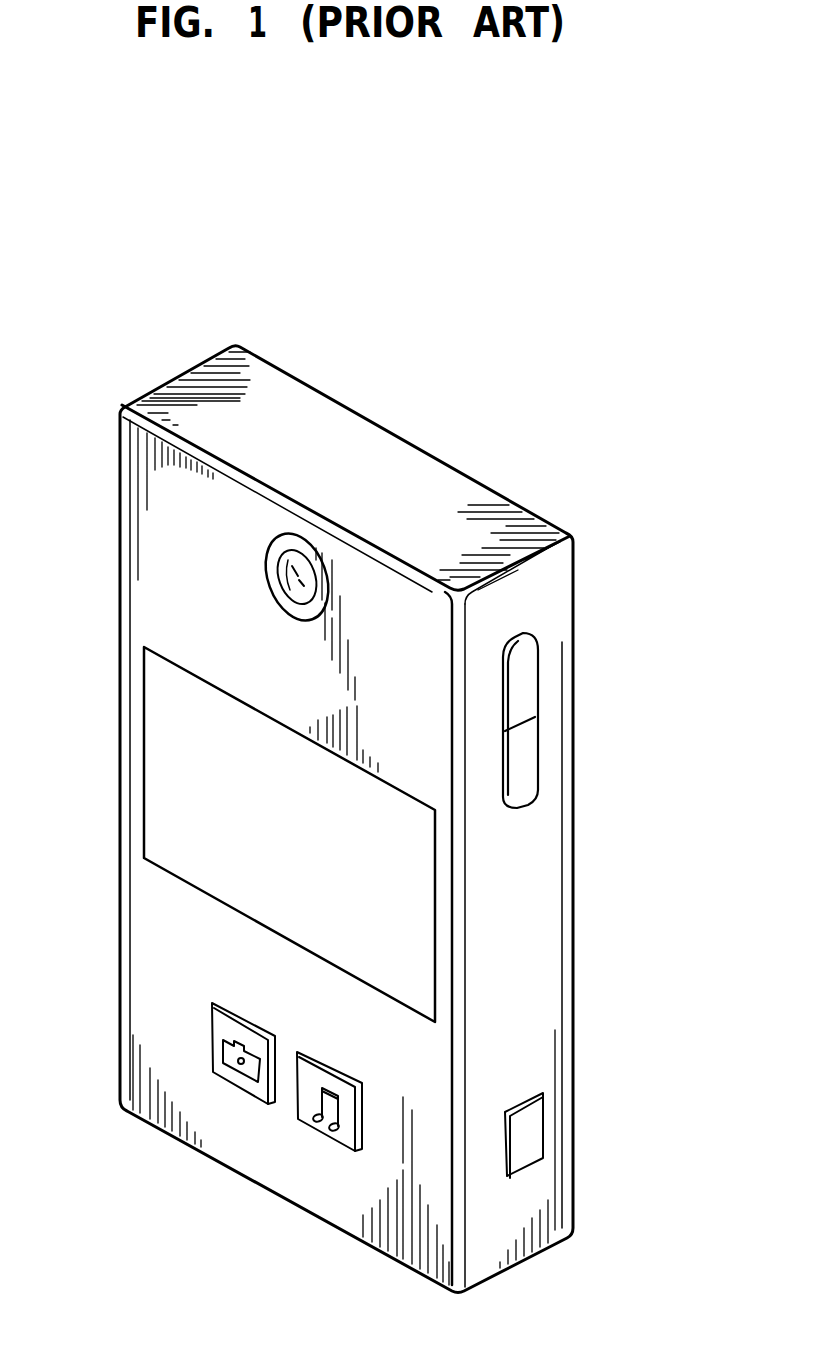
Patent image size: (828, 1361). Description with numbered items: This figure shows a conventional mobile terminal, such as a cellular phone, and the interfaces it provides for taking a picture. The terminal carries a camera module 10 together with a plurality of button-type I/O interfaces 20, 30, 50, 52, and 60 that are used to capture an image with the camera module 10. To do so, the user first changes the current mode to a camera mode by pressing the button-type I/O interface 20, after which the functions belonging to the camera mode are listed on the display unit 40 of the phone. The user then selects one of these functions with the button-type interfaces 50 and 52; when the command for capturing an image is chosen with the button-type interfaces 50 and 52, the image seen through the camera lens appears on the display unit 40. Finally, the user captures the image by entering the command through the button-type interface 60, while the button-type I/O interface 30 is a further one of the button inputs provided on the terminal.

The camera module 10 is at (285, 591).
The button-type I/O interface 20 is at (238, 1078).
The button-type I/O interface 30 is at (320, 1128).
The display unit 40 is at (148, 745).
The button-type interface 50 is at (584, 708).
The button-type interface 52 is at (530, 760).
The button-type interface 60 is at (540, 1130).